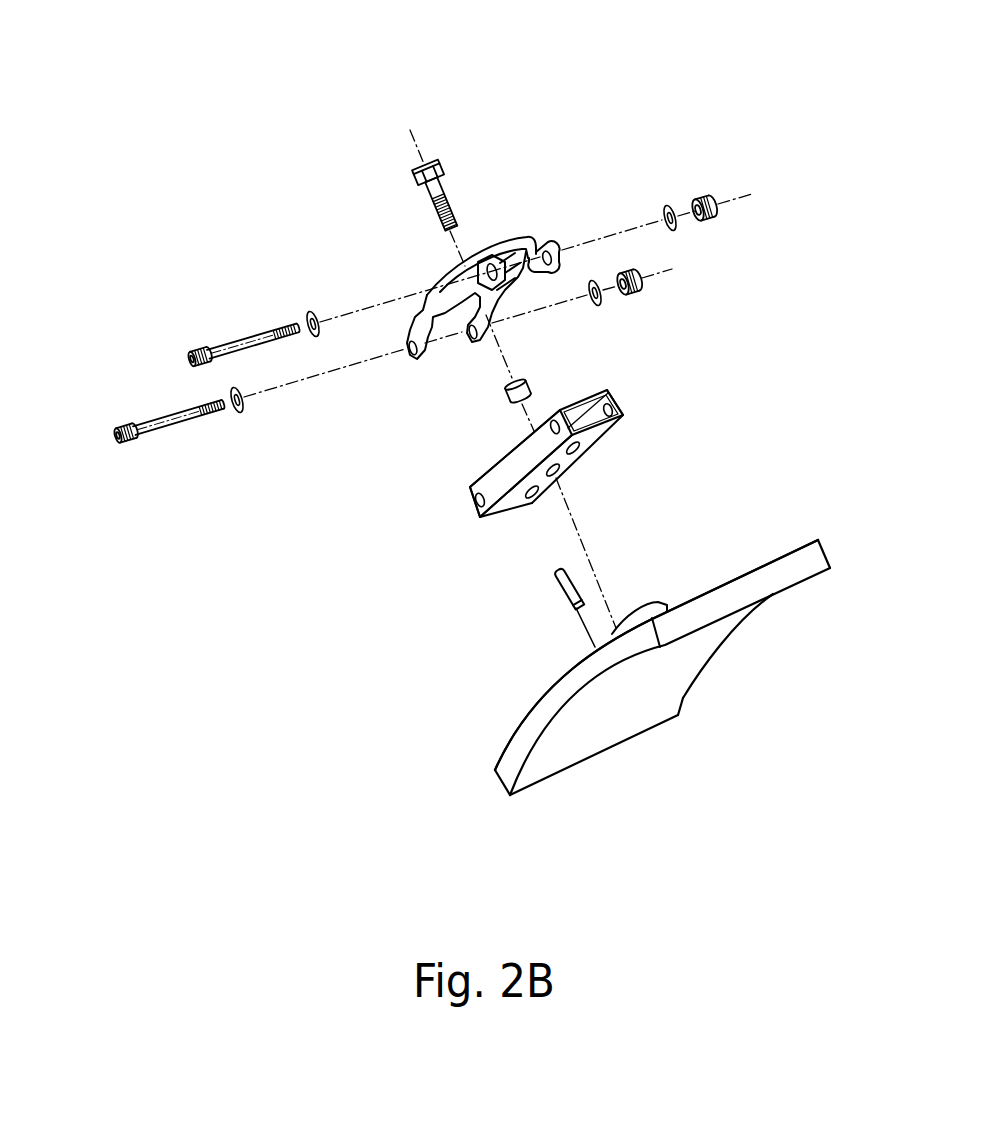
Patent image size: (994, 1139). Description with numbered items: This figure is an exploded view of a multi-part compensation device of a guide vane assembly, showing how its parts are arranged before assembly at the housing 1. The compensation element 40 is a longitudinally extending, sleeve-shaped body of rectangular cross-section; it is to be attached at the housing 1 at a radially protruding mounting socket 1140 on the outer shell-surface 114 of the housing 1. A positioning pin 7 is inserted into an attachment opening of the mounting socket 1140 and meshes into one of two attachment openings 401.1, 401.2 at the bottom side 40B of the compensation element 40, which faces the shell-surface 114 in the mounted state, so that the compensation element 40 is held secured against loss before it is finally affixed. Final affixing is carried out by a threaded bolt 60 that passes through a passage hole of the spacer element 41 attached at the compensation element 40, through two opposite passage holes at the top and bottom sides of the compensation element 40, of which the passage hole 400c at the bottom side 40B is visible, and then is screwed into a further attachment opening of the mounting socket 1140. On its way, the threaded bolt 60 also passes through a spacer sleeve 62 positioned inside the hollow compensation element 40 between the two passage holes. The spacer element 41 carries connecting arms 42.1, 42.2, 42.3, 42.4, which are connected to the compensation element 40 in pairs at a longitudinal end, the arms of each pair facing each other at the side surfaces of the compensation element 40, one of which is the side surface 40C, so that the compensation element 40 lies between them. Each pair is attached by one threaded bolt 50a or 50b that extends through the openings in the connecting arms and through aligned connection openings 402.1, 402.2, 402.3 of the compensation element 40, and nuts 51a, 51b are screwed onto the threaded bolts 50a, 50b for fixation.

The housing 1 is at (593, 773).
The positioning pin 7 is at (560, 582).
The compensation element 40 is at (620, 388).
The bottom side 40B is at (513, 510).
The side surface 40C is at (472, 503).
The spacer element 41 is at (503, 232).
The connecting arm 42.1 is at (407, 356).
The connecting arm 42.2 is at (478, 262).
The connecting arm 42.3 is at (547, 247).
The connecting arm 42.4 is at (470, 348).
The threaded bolt 50a is at (167, 412).
The threaded bolt 50b is at (250, 337).
The nut 51a is at (640, 273).
The nut 51b is at (705, 193).
The threaded bolt 60 is at (433, 163).
The spacer sleeve 62 is at (532, 386).
The outer shell-surface 114 is at (810, 540).
The mounting socket 1140 is at (660, 603).
The passage hole 400c is at (555, 470).
The attachment opening 401.1 is at (530, 495).
The attachment opening 401.2 is at (582, 452).
The connection opening 402.1 is at (515, 477).
The connection opening 402.2 is at (533, 427).
The connection opening 402.3 is at (624, 413).